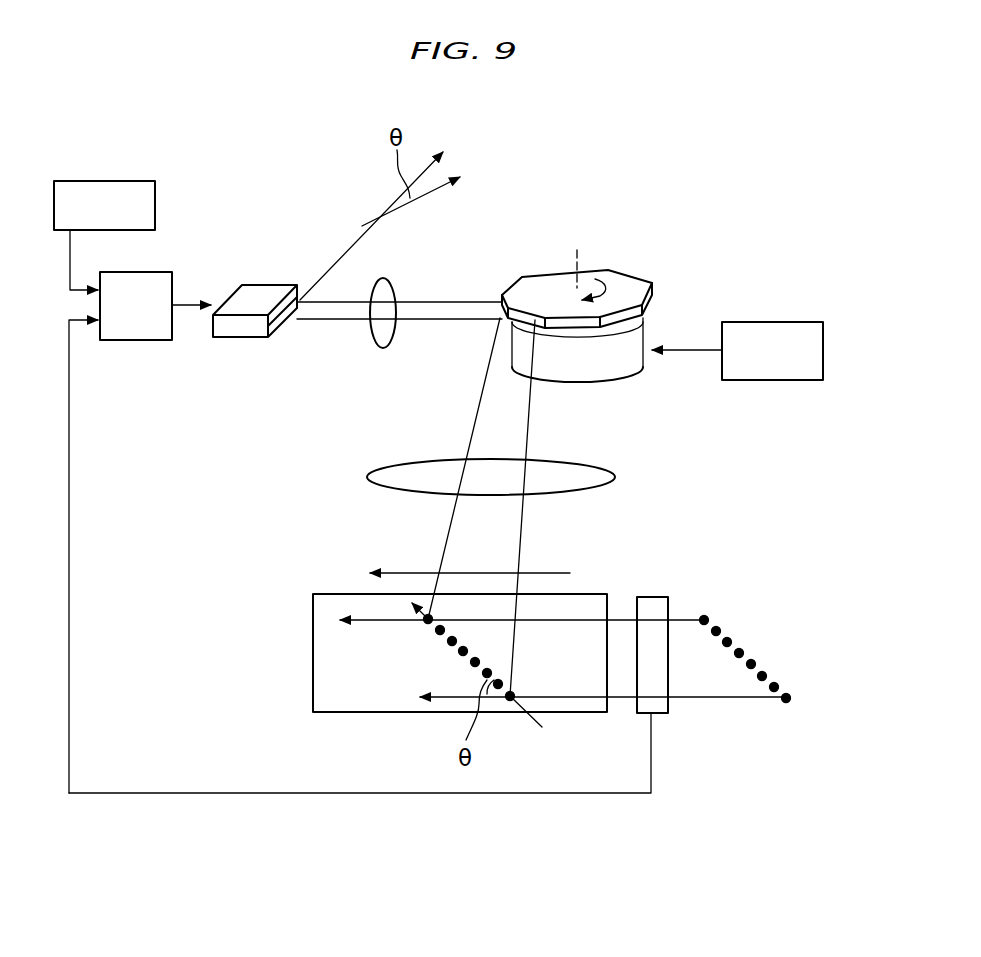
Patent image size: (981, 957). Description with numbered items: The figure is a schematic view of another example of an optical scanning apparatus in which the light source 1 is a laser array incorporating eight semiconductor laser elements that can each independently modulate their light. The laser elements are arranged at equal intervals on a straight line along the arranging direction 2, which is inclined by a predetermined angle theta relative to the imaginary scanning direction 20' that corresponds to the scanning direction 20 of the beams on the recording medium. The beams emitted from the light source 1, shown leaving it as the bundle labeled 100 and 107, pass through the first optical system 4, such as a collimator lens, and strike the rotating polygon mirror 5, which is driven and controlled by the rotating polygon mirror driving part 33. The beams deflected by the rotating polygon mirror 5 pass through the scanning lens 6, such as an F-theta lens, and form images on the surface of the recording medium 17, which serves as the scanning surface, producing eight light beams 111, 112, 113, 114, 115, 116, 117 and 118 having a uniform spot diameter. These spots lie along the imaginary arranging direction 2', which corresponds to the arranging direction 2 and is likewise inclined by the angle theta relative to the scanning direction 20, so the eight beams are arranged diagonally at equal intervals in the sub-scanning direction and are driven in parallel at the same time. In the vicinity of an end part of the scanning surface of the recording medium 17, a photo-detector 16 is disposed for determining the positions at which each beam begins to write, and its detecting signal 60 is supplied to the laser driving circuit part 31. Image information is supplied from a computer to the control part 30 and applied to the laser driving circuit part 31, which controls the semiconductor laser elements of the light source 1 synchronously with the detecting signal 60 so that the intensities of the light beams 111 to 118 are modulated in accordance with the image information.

The light source 1 is at (262, 290).
The arranging direction 2 is at (368, 226).
The imaginary arranging direction 2' is at (483, 698).
The first optical system 4 is at (395, 278).
The rotating polygon mirror 5 is at (630, 274).
The scanning lens 6 is at (616, 477).
The photo-detector 16 is at (653, 597).
The recording medium 17 is at (388, 713).
The scanning direction 20 is at (482, 550).
The imaginary scanning direction 20' is at (411, 214).
The control part 30 is at (155, 205).
The laser driving circuit part 31 is at (134, 340).
The rotating polygon mirror driving part 33 is at (775, 322).
The detecting signal 60 is at (651, 751).
The light beam 100 is at (345, 305).
The light beam 107 is at (312, 321).
The light beam 111 is at (706, 617).
The light beam 112 is at (718, 628).
The light beam 113 is at (729, 639).
The light beam 114 is at (741, 650).
The light beam 115 is at (753, 661).
The light beam 116 is at (764, 673).
The light beam 117 is at (778, 686).
The light beam 118 is at (790, 701).